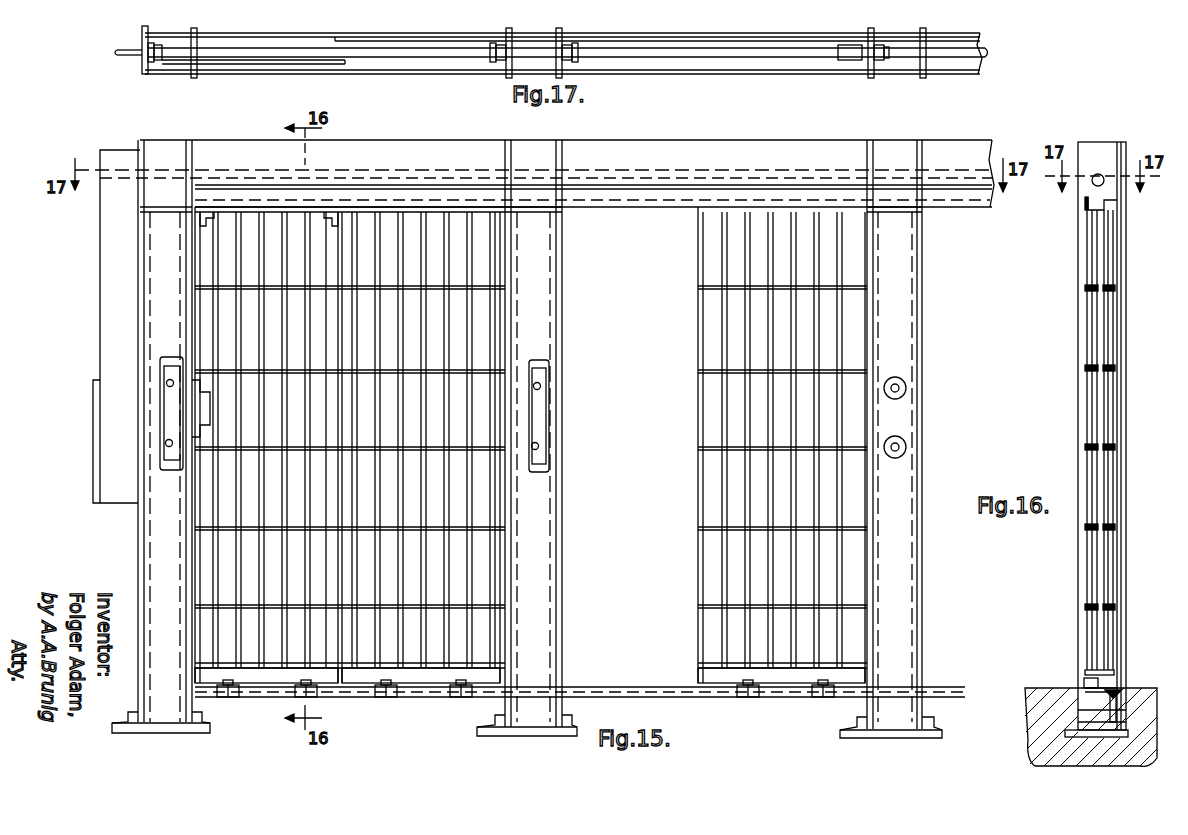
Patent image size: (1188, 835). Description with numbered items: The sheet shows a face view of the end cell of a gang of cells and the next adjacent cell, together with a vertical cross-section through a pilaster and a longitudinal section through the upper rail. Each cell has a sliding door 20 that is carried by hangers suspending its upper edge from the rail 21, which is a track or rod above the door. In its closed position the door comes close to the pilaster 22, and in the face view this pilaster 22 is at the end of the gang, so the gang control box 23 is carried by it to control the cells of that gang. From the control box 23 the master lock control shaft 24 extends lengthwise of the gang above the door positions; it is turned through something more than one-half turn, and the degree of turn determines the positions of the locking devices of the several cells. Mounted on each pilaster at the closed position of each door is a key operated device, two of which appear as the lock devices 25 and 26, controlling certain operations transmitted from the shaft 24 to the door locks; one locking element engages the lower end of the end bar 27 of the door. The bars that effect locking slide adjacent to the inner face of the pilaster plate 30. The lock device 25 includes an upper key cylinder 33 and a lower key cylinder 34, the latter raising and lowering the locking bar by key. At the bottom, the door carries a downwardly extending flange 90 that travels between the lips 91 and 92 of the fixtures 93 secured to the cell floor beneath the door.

In FIG. 15, the sliding door 20 is at (531, 445).
In FIG. 16, the sliding door 20 is at (1087, 553).
In FIG. 16, the rail 21 is at (1104, 202).
In FIG. 17, the pilaster 22 is at (168, 72).
In FIG. 15, the pilaster 22 is at (163, 561).
In FIG. 16, the pilaster 22 is at (1086, 596).
In FIG. 15, the gang control box 23 is at (116, 326).
In FIG. 17, the master lock control shaft 24 is at (282, 50).
In FIG. 15, the master lock control shaft 24 is at (398, 170).
In FIG. 16, the master lock control shaft 24 is at (1100, 173).
In FIG. 15, the key operated lock device 25 is at (175, 426).
In FIG. 15, the key operated lock device 26 is at (541, 422).
In FIG. 15, the end bar of the door 27 is at (200, 542).
In FIG. 15, the pilaster plate 30 is at (186, 503).
In FIG. 16, the pilaster plate 30 is at (1085, 466).
In FIG. 15, the upper key cylinder 33 is at (167, 384).
In FIG. 15, the lower key cylinder 34 is at (166, 446).
In FIG. 16, the downwardly extending flange 90 is at (1090, 683).
In FIG. 16, the lip 91 is at (1085, 688).
In FIG. 16, the lip 92 is at (1110, 688).
In FIG. 15, the floor fixture 93 is at (455, 699).